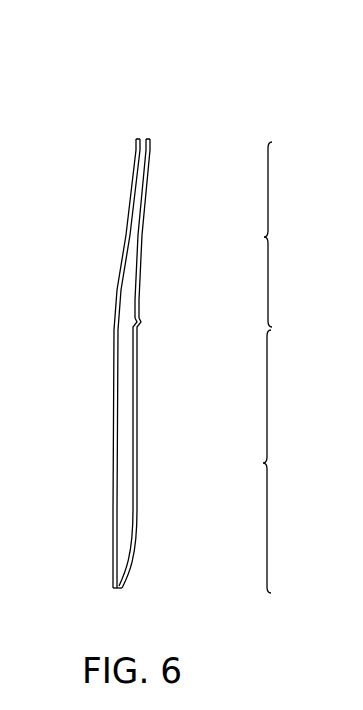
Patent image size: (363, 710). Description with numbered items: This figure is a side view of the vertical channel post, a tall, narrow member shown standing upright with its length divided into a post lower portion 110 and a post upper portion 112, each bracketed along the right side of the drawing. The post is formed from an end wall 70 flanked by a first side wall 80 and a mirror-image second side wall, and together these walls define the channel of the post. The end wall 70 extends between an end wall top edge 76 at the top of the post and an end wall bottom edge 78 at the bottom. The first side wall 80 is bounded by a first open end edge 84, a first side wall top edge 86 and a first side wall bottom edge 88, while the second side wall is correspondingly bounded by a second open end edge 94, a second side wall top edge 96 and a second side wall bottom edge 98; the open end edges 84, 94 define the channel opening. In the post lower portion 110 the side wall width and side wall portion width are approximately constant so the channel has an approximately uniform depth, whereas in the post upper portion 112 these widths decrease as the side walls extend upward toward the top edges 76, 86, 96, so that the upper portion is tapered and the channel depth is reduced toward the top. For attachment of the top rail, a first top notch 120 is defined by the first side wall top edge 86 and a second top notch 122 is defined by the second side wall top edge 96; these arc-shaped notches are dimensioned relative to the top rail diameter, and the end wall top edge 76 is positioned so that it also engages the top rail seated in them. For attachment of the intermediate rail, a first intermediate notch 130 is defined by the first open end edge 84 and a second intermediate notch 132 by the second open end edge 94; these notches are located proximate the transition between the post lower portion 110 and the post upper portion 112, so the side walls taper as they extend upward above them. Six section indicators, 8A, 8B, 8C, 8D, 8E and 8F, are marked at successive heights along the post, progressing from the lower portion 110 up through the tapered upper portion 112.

The end wall 70 is at (165, 333).
The end wall top edge 76 is at (138, 138).
The end wall bottom edge 78 is at (113, 590).
The first side wall 80 is at (120, 568).
The first open end edge 84 is at (177, 234).
The second open end edge 94 is at (142, 275).
The first side wall top edge 86 is at (169, 99).
The second side wall top edge 96 is at (169, 99).
The first top notch 120 is at (169, 99).
The second top notch 122 is at (146, 138).
The first side wall bottom edge 88 is at (153, 564).
The second side wall bottom edge 98 is at (124, 590).
The first intermediate notch 130 is at (195, 333).
The second intermediate notch 132 is at (138, 327).
The post lower portion 110 is at (285, 461).
The post upper portion 112 is at (287, 234).
The section line 8A- 8A is at (164, 519).
The section line 8B- 8B is at (165, 448).
The section line 8C- 8C is at (190, 380).
The section line 8D- 8D is at (167, 308).
The section line 8E- 8E is at (162, 213).
The section line 8F- 8F is at (170, 131).